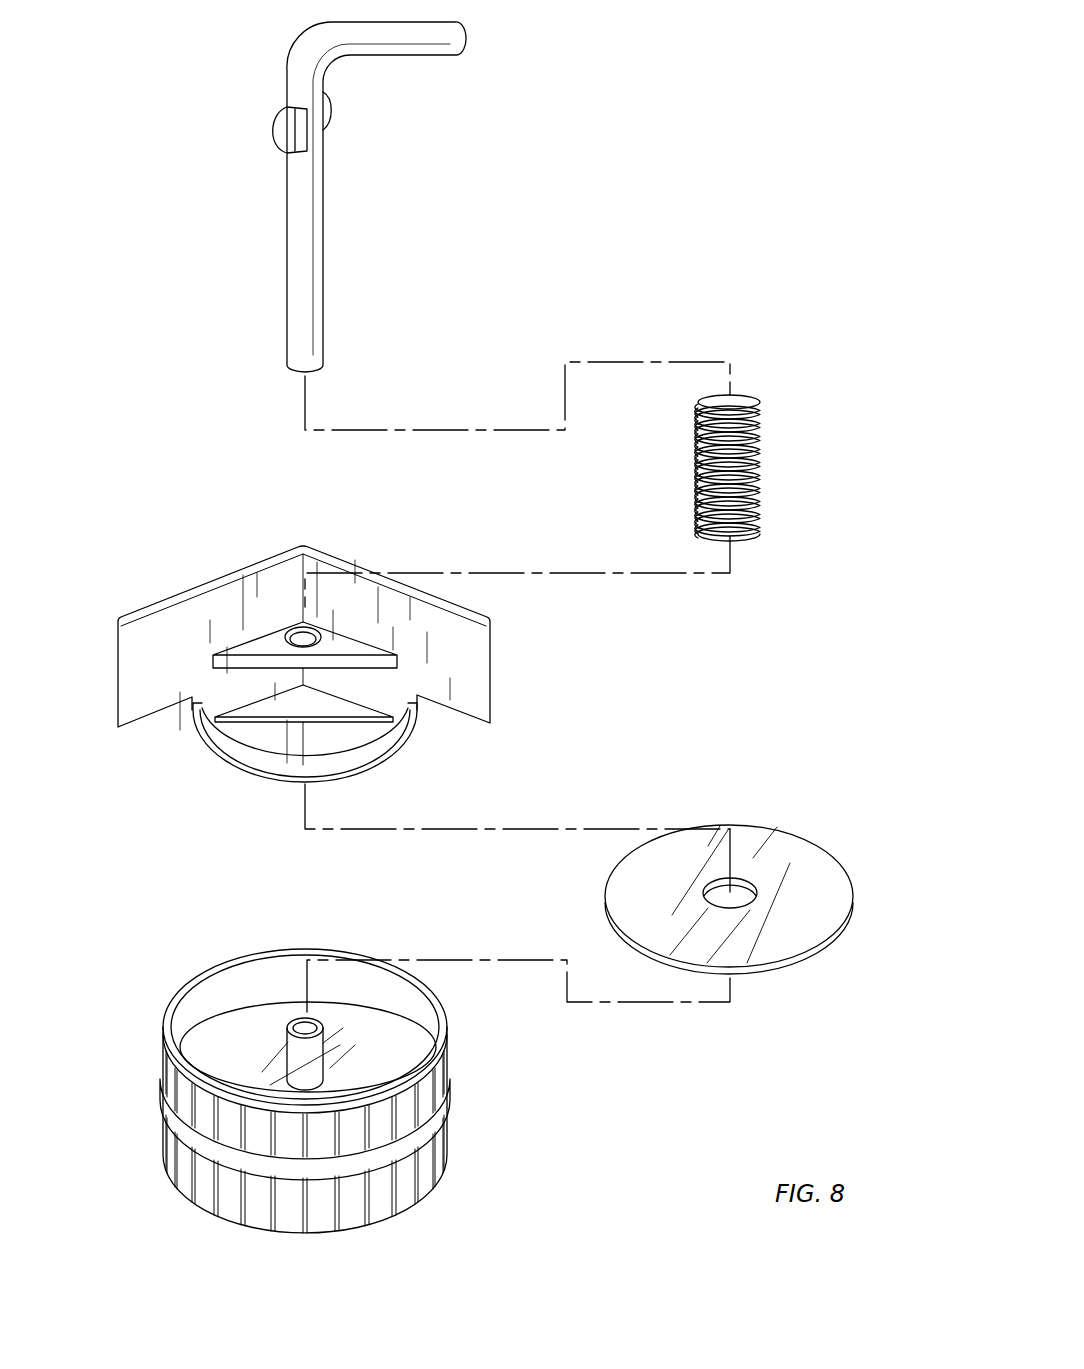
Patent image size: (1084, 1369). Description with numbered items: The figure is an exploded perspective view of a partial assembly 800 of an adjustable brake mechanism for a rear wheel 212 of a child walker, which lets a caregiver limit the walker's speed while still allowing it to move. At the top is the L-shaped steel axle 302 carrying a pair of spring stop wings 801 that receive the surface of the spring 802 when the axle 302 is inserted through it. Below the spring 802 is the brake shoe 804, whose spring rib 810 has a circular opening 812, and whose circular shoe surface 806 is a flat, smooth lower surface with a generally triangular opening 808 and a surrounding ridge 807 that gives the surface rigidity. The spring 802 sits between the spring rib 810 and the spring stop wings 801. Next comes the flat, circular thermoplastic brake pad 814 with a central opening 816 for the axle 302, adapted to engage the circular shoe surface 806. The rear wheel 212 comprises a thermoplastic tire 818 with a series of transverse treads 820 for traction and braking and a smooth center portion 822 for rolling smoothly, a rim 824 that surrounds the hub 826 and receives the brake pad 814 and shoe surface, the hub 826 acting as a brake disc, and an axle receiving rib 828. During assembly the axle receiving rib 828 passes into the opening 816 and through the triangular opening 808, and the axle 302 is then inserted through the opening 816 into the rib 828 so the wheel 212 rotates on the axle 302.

The partial assembly 800 is at (653, 130).
The spring stop wings 801 is at (273, 130).
The axle 302 is at (323, 305).
The spring 802 is at (760, 464).
The brake shoe 804 is at (492, 672).
The circular shoe surface 806 is at (259, 811).
The ridge 807 is at (405, 740).
The generally triangular opening 808 is at (235, 772).
The spring rib 810 is at (262, 643).
The circular opening 812 is at (313, 628).
The brake pad 814 is at (830, 862).
The central opening 816 is at (741, 890).
The tire 818 is at (447, 1028).
The transverse treads 820 is at (223, 1200).
The smooth center portion 822 is at (408, 1147).
The rim 824 is at (217, 975).
The hub 826 is at (212, 1055).
The axle receiving rib 828 is at (307, 1028).
The rear wheel 212 is at (490, 1130).